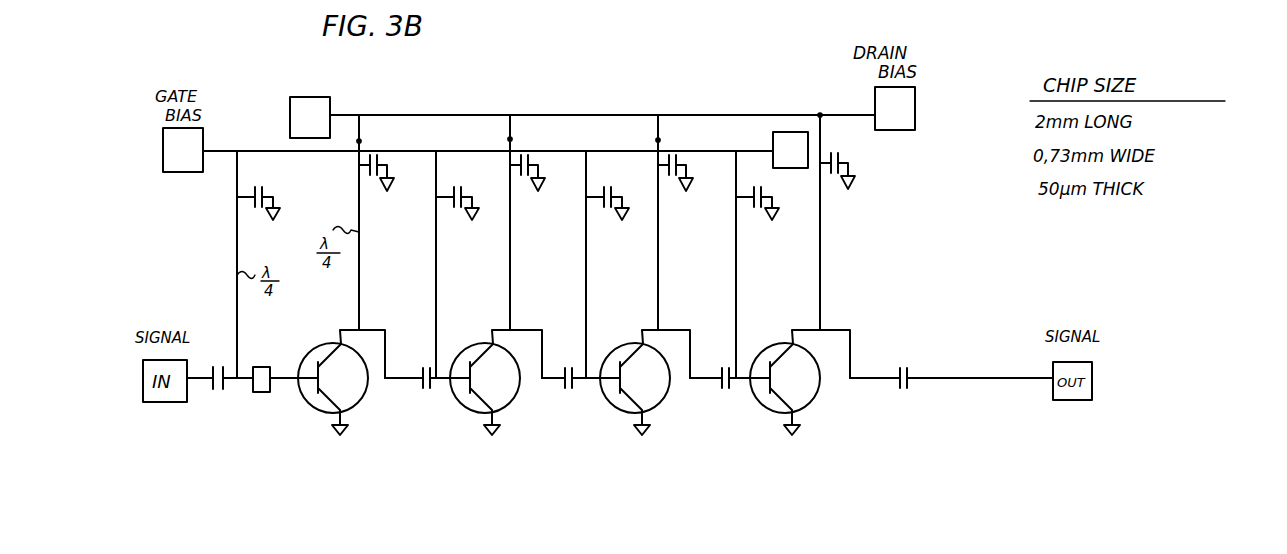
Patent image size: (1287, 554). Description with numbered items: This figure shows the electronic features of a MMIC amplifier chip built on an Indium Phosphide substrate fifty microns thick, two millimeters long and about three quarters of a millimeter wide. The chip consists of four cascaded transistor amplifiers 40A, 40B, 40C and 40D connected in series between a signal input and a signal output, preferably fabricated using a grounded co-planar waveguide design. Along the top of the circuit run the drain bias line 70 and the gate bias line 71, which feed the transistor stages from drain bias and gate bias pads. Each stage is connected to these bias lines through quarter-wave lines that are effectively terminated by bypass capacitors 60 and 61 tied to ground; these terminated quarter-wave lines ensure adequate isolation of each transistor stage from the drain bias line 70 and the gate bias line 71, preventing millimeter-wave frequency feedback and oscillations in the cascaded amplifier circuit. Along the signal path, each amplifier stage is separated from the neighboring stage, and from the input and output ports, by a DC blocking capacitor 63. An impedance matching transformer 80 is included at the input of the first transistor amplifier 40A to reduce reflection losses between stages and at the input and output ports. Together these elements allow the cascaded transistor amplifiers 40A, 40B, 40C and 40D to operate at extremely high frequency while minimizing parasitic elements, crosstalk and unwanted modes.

The cascaded transistor amplifier 40A is at (382, 415).
The cascaded transistor amplifier 40B is at (529, 422).
The cascaded transistor amplifier 40C is at (677, 420).
The cascaded transistor amplifier 40D is at (829, 425).
The bypass capacitor 60 is at (277, 176).
The bypass capacitor 61 is at (391, 213).
The DC blocking capacitor 63 is at (220, 410).
The drain bias line 70 is at (558, 115).
The gate bias line 71 is at (702, 151).
The impedance matching transformer 80 is at (263, 412).